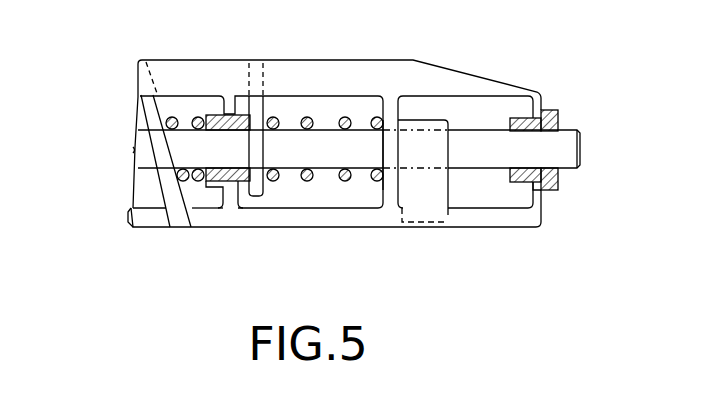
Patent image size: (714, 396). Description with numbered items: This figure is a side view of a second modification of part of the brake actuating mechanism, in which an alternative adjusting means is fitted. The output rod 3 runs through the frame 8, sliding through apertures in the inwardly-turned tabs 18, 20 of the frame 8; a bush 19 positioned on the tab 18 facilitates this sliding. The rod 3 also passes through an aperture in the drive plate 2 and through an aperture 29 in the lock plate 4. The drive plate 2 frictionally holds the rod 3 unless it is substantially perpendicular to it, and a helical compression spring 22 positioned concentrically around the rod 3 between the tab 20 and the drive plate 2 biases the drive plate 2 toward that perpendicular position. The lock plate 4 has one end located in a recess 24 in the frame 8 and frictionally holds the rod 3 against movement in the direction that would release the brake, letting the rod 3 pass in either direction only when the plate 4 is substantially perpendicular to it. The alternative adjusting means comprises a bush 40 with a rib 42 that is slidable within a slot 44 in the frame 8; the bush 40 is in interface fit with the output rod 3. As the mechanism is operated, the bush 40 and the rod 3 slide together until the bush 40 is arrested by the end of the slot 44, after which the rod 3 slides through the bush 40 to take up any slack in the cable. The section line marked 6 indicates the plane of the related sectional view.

The drive plate 2 is at (261, 197).
The output rod 3 is at (562, 142).
The lock plate 4 is at (150, 108).
The section line 6 is at (428, 116).
The frame 8 is at (338, 73).
The inwardly-turned tab 18 is at (232, 110).
The bush 19 is at (216, 197).
The inwardly-turned tab 20 is at (390, 183).
The helical compression spring 22 is at (343, 182).
The recess 24 is at (168, 213).
The aperture 29 is at (143, 148).
The bush 40 is at (452, 126).
The rib 42 is at (440, 219).
The slot 44 is at (507, 228).